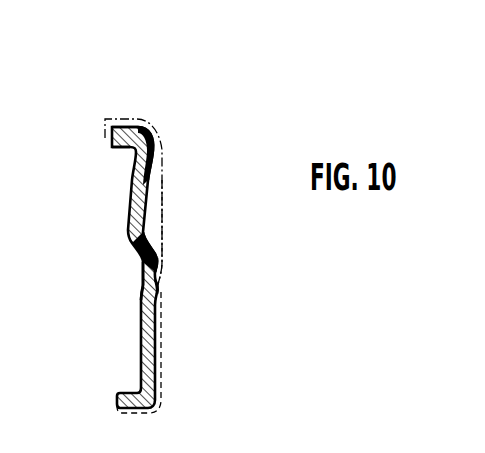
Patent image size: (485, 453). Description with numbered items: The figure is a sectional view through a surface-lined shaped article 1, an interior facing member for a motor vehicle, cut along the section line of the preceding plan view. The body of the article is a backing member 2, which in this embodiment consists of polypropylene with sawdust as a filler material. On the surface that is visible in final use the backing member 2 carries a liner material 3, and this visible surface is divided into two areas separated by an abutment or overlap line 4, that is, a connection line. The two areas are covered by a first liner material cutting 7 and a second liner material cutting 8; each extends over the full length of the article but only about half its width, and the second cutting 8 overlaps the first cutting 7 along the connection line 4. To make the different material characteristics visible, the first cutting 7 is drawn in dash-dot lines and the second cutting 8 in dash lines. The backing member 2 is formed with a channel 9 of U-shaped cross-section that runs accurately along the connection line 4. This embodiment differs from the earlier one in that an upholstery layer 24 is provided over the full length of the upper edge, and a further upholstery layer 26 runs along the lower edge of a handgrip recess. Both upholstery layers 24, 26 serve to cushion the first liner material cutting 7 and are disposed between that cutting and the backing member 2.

The shaped article 1 is at (169, 140).
The backing member 2 is at (142, 279).
The liner material 3 is at (165, 264).
The abutment or overlap line 4 is at (165, 289).
The first liner material cutting 7 is at (163, 240).
The second liner material cutting 8 is at (161, 359).
The channel 9 is at (142, 291).
The upholstery layer 24 is at (133, 124).
The further upholstery layer 26 is at (152, 246).